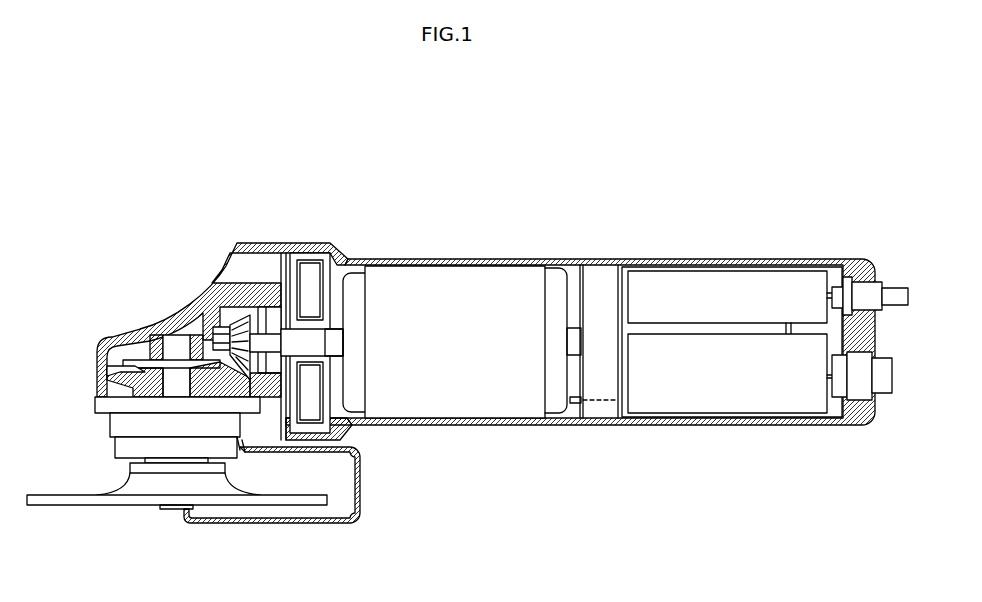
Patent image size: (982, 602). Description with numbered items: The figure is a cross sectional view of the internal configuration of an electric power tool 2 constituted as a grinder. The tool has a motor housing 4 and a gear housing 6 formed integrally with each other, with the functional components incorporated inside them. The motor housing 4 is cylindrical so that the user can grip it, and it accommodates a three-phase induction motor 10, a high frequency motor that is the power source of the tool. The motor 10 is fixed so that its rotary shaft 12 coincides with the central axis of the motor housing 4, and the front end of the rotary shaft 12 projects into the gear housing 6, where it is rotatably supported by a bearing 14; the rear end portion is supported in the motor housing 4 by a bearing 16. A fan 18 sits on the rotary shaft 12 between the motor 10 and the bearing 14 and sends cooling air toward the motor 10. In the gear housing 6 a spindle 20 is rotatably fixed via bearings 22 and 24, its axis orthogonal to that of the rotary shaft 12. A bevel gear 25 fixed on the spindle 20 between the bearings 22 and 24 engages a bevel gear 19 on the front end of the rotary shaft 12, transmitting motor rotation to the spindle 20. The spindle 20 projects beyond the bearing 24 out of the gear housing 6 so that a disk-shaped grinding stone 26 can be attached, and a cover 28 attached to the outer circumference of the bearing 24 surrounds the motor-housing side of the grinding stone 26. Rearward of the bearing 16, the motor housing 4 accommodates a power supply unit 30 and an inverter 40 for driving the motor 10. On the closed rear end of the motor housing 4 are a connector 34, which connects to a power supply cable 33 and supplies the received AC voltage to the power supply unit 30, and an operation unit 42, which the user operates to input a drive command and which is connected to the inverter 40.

The electric power tool 2 is at (247, 190).
The motor housing 4 is at (534, 255).
The gear housing 6 is at (127, 333).
The motor 10 is at (433, 270).
The rotary shaft 12 is at (338, 352).
The bearing 14 is at (273, 313).
The bearing 16 is at (590, 283).
The fan 18 is at (312, 275).
The bevel gear 19 is at (237, 320).
The spindle 20 is at (167, 390).
The bearing 22 is at (157, 340).
The bearing 24 is at (117, 428).
The bevel gear 25 is at (117, 362).
The grinding stone 26 is at (83, 500).
The cover 28 is at (357, 520).
The power supply unit 30 is at (703, 285).
The power supply cable 33 is at (895, 286).
The connector 34 is at (865, 290).
The inverter 40 is at (660, 407).
The operation unit 42 is at (860, 432).